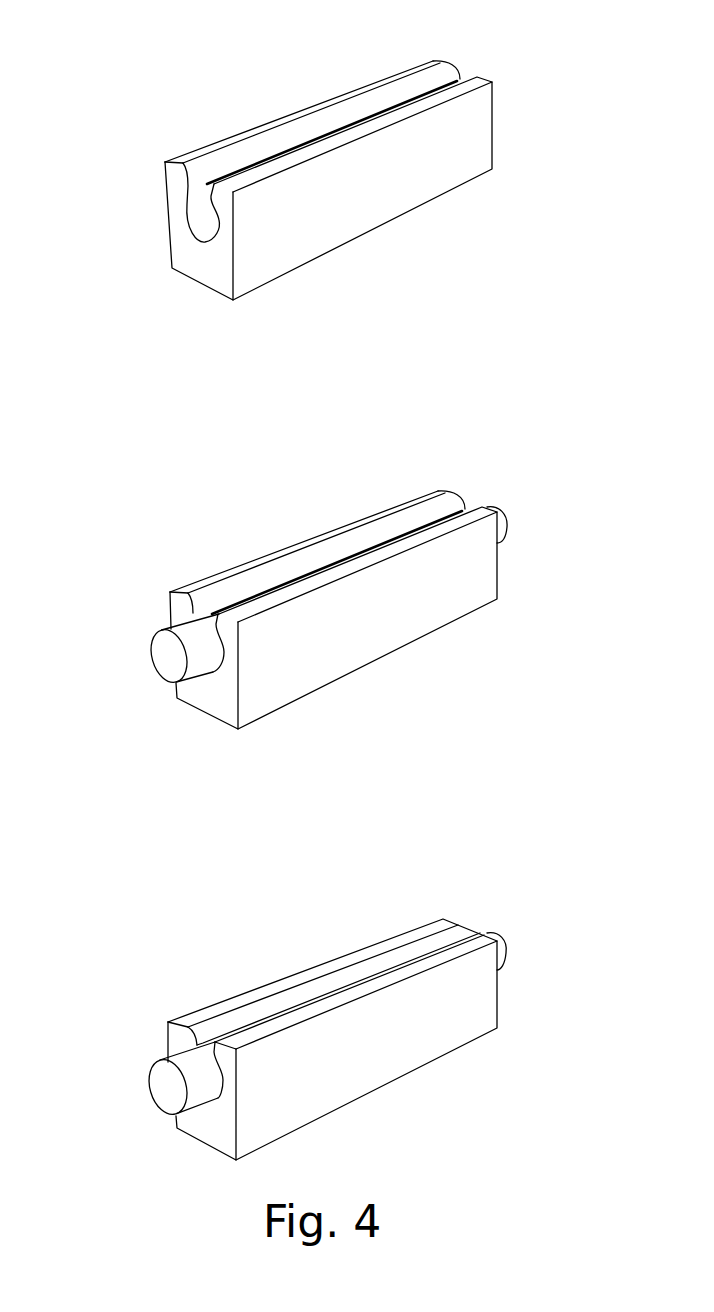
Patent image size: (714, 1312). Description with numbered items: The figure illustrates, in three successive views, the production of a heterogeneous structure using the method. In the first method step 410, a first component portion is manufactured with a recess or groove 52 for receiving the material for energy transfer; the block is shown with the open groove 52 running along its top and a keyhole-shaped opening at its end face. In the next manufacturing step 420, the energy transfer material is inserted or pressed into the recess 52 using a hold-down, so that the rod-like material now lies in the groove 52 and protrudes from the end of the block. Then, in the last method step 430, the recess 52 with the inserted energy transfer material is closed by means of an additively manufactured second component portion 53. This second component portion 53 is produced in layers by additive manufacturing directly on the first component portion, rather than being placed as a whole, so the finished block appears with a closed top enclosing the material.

The first method step 410 is at (328, 152).
The manufacturing step 420 is at (302, 586).
The last method step 430 is at (282, 1015).
The recess or groove 52 is at (380, 100).
The second component portion 53 is at (248, 998).